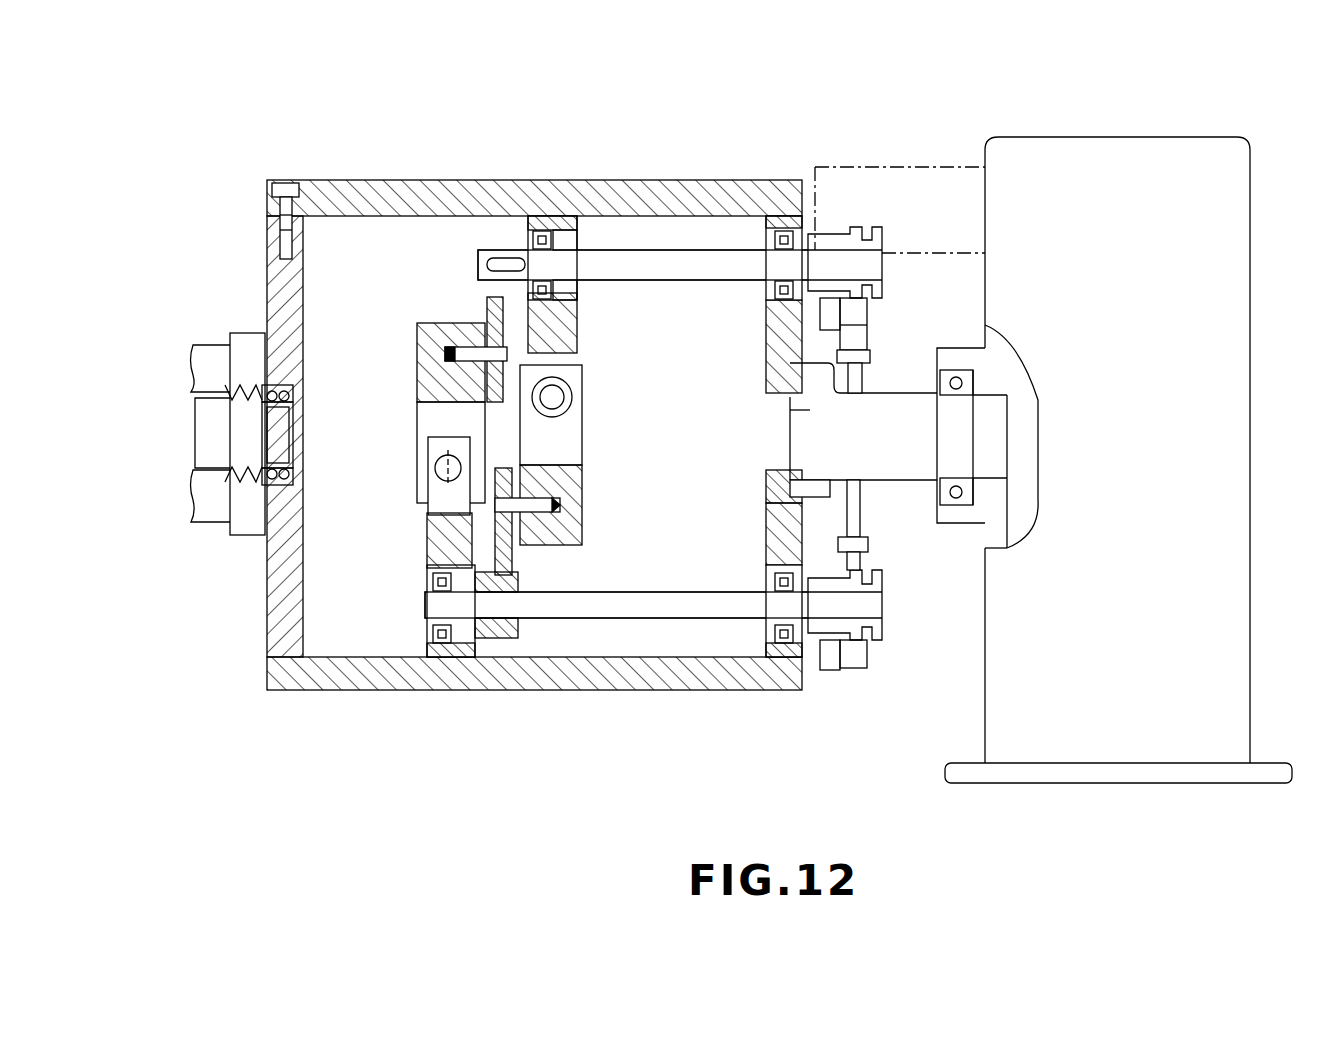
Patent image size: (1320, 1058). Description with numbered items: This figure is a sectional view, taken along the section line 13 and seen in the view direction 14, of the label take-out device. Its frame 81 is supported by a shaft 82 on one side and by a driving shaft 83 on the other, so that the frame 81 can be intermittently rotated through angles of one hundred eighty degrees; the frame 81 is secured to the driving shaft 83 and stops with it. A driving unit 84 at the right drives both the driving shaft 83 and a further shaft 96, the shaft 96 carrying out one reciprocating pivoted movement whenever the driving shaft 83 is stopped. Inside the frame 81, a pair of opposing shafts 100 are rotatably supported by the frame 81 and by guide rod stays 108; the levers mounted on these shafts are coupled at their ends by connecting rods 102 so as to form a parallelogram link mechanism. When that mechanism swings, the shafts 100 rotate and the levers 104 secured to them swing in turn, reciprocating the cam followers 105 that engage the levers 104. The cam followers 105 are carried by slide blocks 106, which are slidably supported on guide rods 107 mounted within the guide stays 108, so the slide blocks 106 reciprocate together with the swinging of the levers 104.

The section line 13 is at (450, 265).
The view direction 14 is at (890, 305).
The frame 81 is at (330, 694).
The shaft 82 is at (200, 450).
The driving shaft 83 is at (905, 468).
The driving unit 84 is at (1145, 120).
The shaft 96 is at (912, 162).
The shafts 100 is at (664, 255).
The connecting rods 102 is at (866, 382).
The levers 104 is at (487, 297).
The cam followers 105 is at (505, 350).
The slide blocks 106 is at (417, 355).
The guide rods 107 is at (440, 468).
The guide rod stays 108 is at (570, 297).